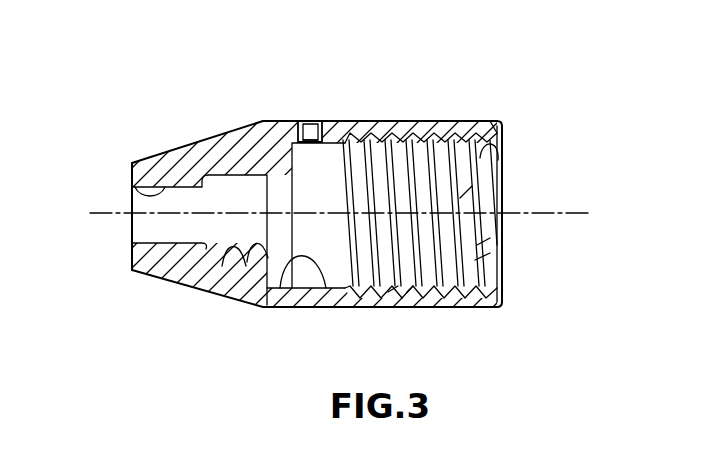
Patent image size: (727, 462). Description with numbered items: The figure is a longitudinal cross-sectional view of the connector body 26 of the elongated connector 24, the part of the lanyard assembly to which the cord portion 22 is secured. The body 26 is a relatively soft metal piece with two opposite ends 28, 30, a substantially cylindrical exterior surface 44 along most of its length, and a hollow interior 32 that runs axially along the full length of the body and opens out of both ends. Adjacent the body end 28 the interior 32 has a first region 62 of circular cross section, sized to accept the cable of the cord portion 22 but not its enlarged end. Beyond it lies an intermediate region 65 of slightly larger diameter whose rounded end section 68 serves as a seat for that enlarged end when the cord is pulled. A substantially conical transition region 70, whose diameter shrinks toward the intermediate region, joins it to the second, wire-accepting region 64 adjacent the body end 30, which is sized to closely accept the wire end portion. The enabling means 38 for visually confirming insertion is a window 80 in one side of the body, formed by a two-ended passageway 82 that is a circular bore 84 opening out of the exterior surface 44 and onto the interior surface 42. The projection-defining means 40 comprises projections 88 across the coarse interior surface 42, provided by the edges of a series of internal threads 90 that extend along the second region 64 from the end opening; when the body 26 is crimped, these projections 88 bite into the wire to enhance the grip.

The cord portion 22 is at (438, 120).
The connector 24 is at (467, 120).
The connector body 26 is at (378, 120).
The body end 28 is at (133, 253).
The body end 30 is at (503, 298).
The hollow interior 32 is at (452, 290).
The enabling means 38 is at (265, 104).
The projection-defining means 40 is at (545, 279).
The interior surface 42 is at (475, 140).
The exterior surface 44 is at (447, 120).
The first region 62 is at (140, 193).
The second region 64 is at (492, 158).
The intermediate region 65 is at (236, 250).
The rounded end section 68 is at (205, 245).
The transition region 70 is at (312, 270).
The window 80 is at (302, 120).
The passageway 82 is at (318, 122).
The bore 84 is at (308, 120).
The projections 88 is at (460, 198).
The internal threads 90 is at (475, 260).